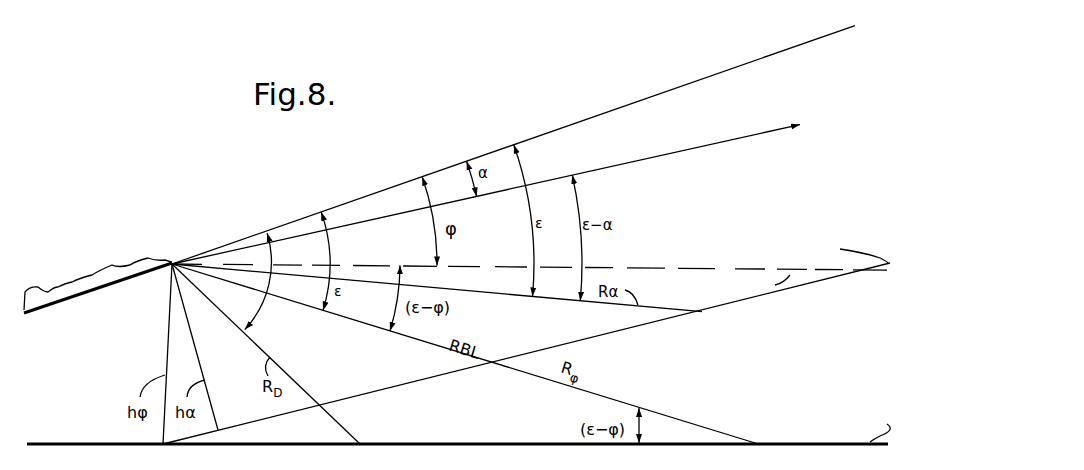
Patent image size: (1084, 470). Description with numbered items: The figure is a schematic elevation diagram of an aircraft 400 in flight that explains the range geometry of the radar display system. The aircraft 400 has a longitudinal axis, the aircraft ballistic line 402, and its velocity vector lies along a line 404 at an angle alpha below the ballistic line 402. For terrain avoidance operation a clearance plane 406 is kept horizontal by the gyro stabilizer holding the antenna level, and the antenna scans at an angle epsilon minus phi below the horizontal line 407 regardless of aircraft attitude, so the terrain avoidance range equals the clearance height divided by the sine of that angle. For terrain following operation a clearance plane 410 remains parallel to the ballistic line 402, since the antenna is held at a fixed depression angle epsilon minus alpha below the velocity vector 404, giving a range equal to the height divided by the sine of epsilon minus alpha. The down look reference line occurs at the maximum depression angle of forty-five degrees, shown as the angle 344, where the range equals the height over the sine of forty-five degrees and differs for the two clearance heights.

The aircraft 400 is at (93, 278).
The aircraft ballistic line (ABL) 402 is at (577, 122).
The velocity vector line 404 is at (655, 158).
The clearance plane for terrain avoidance operation 406 is at (473, 428).
The horizontal line 407 is at (636, 266).
The clearance plane for terrain following operation 410 is at (717, 310).
The angle 344 is at (258, 305).